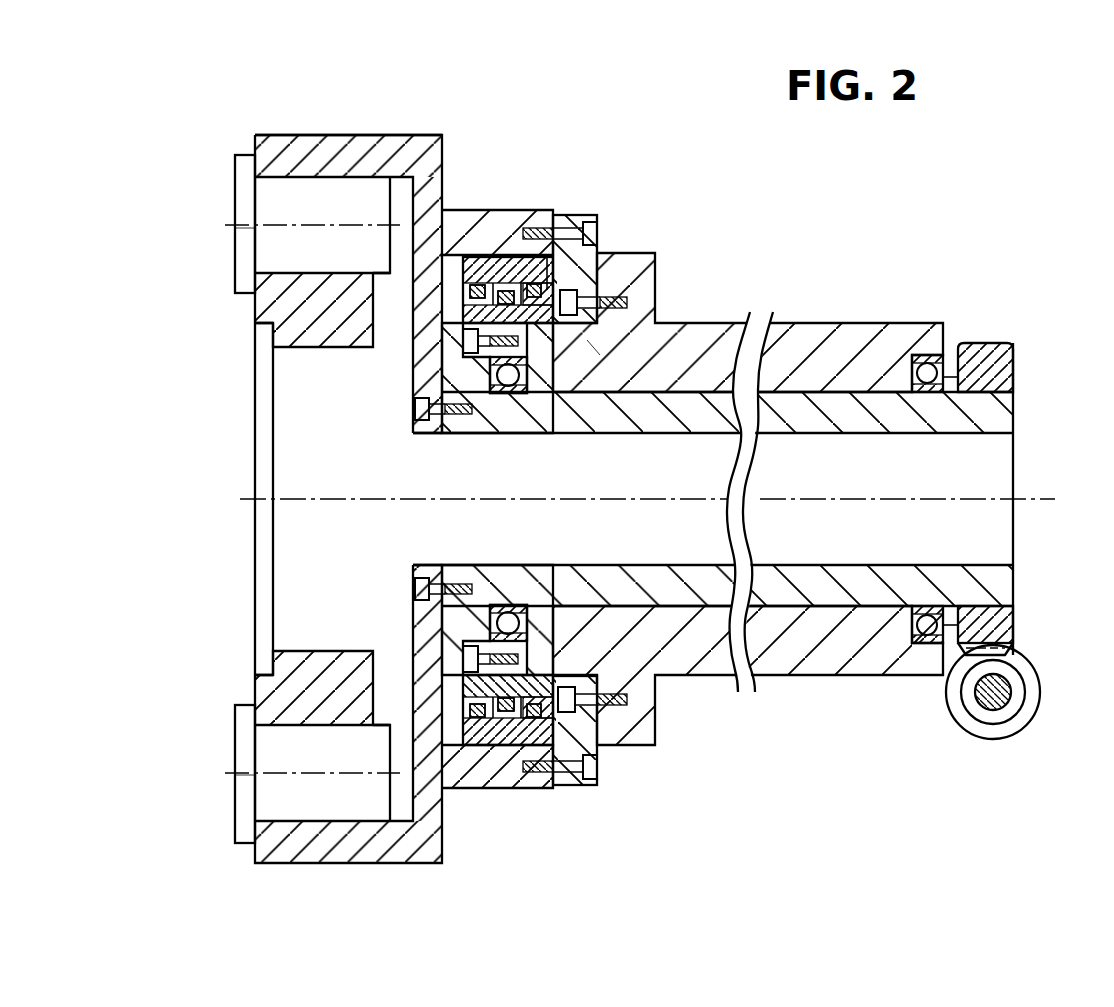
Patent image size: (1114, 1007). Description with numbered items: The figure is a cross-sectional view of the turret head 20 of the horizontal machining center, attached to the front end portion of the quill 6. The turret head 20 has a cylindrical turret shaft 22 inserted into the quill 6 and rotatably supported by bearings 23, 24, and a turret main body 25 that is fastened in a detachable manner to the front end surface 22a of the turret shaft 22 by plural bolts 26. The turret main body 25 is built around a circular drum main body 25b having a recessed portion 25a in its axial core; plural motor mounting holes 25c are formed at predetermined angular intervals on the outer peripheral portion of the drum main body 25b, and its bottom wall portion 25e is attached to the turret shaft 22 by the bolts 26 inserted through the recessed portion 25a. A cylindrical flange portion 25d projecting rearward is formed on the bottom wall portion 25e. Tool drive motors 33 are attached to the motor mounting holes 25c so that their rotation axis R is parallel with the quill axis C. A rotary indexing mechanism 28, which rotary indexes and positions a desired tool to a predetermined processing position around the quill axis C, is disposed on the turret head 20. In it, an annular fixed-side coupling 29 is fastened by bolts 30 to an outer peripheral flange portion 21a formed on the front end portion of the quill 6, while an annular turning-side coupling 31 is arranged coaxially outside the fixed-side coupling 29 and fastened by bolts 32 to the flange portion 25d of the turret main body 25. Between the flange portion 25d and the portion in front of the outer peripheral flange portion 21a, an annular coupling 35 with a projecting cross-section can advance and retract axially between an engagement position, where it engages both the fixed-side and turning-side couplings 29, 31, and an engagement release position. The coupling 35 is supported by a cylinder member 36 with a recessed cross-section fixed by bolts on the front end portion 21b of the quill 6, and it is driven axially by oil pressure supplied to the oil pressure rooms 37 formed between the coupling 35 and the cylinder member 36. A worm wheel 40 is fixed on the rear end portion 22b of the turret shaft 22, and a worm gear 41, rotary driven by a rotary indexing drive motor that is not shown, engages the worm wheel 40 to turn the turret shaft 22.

The turret head 20 is at (377, 71).
The turret main body 25 is at (351, 459).
The recessed portion 25a is at (283, 350).
The drum main body 25b is at (375, 133).
The motor mounting holes 25c is at (292, 179).
The flange portion 25d is at (515, 210).
The bottom wall portion 25e is at (420, 400).
The tool drive motor 33 is at (232, 166).
The rotation axis R is at (243, 228).
The bolts 26 is at (418, 562).
The quill 6 is at (740, 485).
The outer peripheral flange portion 21a is at (628, 262).
The front end portion 21b is at (537, 650).
The turret shaft 22 is at (751, 499).
The front end surface 22a is at (427, 435).
The rear end portion 22b is at (988, 378).
The bearing 23 is at (503, 395).
The bearing 24 is at (930, 395).
The rotary indexing mechanism 28 is at (588, 340).
The fixed-side coupling 29 is at (600, 300).
The bolts 30 is at (577, 325).
The turning-side coupling 31 is at (577, 215).
The bolts 32 is at (598, 233).
The coupling 35 is at (423, 444).
The cylinder member 36 is at (470, 292).
The oil pressure rooms 37 is at (470, 340).
The worm wheel 40 is at (1003, 614).
The worm gear 41 is at (1032, 682).
The quill axis C is at (1030, 499).